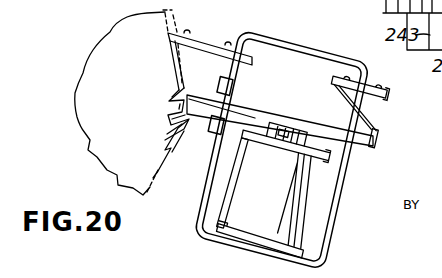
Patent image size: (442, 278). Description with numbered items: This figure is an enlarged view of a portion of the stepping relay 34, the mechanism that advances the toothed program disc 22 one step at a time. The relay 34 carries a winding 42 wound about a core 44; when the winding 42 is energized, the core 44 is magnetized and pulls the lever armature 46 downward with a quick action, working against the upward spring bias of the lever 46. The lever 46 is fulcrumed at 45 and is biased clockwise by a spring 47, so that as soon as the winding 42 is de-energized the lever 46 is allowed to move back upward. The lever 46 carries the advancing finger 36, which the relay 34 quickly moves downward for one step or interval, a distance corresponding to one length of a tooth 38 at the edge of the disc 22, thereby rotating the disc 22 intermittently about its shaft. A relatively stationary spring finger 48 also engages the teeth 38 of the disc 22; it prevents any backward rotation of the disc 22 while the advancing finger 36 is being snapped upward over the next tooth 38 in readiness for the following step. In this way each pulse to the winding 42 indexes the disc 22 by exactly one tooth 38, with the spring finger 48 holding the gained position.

The disc 22 is at (87, 130).
The stepping relay 34 is at (173, 227).
The advancing finger 36 is at (186, 127).
The tooth 38 is at (167, 110).
The winding 42 is at (300, 188).
The core 44 is at (284, 129).
The fulcrum 45 is at (366, 140).
The lever armature 46 is at (248, 117).
The spring 47 is at (371, 105).
The spring finger 48 is at (182, 70).